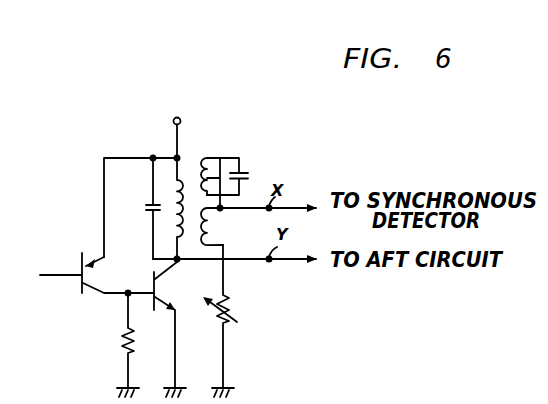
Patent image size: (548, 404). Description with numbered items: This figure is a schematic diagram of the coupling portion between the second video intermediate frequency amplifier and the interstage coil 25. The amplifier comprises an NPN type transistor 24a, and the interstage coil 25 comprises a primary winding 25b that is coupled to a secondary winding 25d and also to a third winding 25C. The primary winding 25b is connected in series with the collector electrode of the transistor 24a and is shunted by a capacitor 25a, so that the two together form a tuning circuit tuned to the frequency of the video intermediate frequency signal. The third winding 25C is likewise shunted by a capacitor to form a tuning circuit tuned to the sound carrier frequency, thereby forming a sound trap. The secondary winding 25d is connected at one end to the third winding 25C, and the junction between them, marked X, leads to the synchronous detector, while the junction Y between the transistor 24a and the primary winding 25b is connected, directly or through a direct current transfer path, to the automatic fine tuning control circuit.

The NPN type transistor 24a is at (168, 306).
The interstage coil 25 is at (196, 136).
The capacitor 25a is at (150, 204).
The primary winding 25b is at (172, 222).
The third winding 25C is at (221, 157).
The secondary winding 25d is at (210, 228).